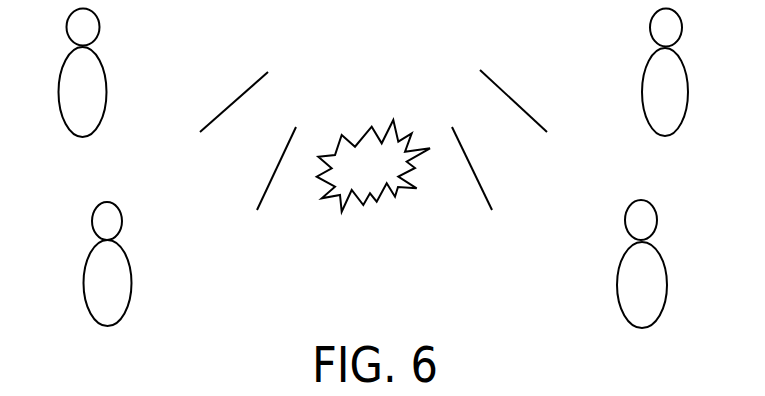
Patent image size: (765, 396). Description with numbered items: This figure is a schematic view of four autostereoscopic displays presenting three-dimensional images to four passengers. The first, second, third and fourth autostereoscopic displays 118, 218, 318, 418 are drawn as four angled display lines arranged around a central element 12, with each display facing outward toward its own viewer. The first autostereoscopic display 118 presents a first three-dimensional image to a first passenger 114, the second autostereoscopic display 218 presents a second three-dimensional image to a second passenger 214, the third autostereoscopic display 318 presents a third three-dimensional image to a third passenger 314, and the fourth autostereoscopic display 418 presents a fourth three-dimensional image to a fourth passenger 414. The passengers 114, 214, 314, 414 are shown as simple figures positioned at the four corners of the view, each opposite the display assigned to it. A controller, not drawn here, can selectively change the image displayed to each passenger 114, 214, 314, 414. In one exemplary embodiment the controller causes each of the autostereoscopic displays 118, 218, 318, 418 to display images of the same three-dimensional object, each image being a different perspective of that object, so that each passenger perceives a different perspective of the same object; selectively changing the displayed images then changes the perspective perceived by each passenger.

The event 12 is at (383, 177).
The first passenger 114 is at (647, 102).
The first autostereoscopic display 118 is at (538, 122).
The second passenger 214 is at (622, 296).
The second autostereoscopic display 218 is at (487, 198).
The third passenger 314 is at (128, 295).
The third autostereoscopic display 318 is at (262, 200).
The fourth passenger 414 is at (62, 102).
The fourth autostereoscopic display 418 is at (210, 123).